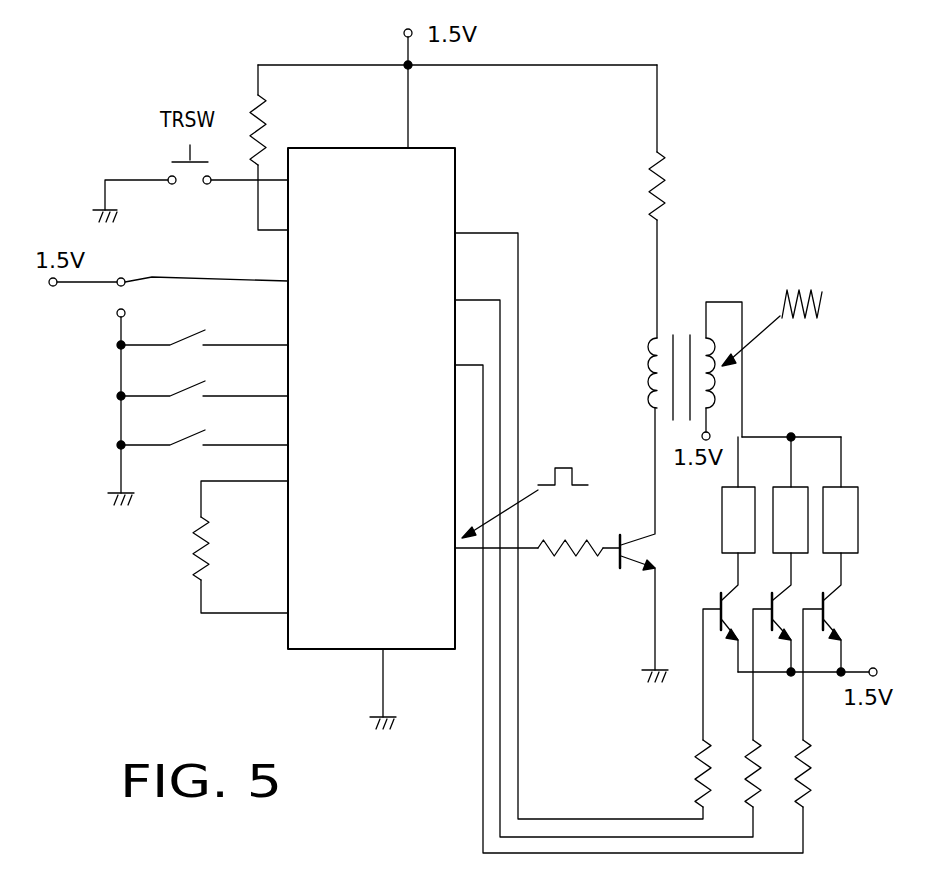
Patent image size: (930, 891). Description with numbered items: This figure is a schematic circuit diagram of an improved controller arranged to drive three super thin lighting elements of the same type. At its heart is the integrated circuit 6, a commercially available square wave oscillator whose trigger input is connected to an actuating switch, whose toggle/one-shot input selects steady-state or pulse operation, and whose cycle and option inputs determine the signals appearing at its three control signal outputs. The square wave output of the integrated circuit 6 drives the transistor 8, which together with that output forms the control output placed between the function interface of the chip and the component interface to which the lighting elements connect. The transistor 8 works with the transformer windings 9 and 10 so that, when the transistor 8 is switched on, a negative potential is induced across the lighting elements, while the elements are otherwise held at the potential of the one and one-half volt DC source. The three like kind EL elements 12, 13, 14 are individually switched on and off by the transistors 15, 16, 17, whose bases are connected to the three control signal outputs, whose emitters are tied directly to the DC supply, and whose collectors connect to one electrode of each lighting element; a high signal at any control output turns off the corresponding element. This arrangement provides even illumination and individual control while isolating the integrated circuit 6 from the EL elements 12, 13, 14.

The integrated circuit 6 is at (338, 640).
The transistor 8 is at (617, 553).
The primary winding of transformer 9 is at (650, 378).
The secondary winding of transformer 10 is at (709, 352).
The EL element 12 is at (750, 492).
The EL element 13 is at (796, 497).
The EL element 14 is at (845, 507).
The transistor 15 is at (715, 605).
The transistor 16 is at (757, 627).
The transistor 17 is at (832, 610).